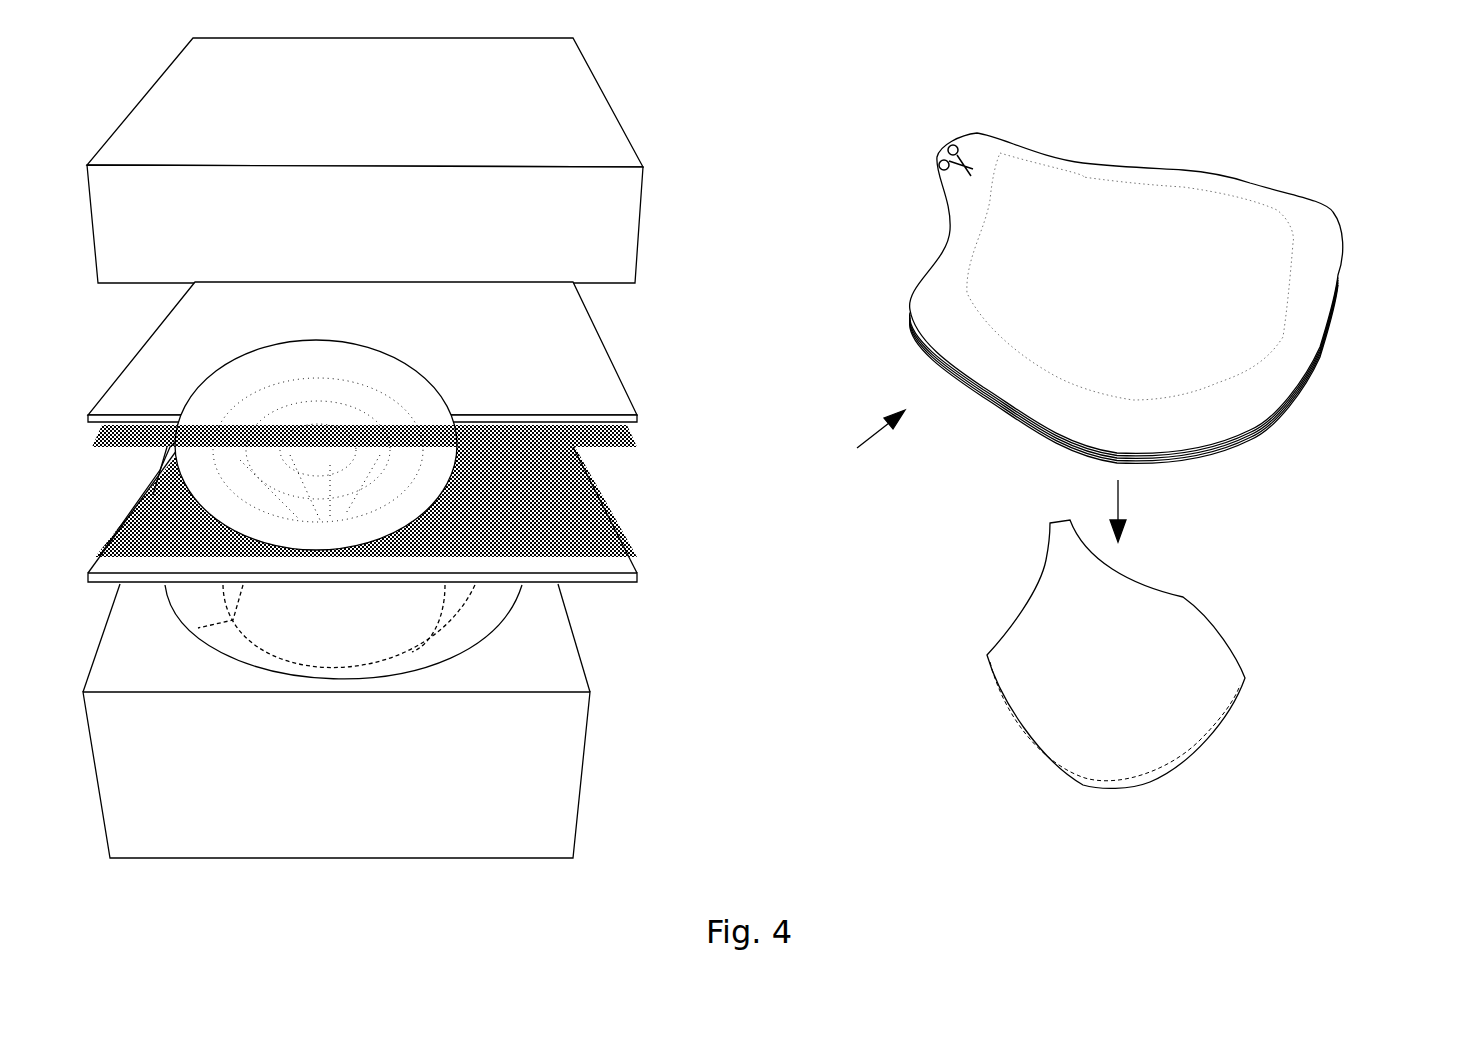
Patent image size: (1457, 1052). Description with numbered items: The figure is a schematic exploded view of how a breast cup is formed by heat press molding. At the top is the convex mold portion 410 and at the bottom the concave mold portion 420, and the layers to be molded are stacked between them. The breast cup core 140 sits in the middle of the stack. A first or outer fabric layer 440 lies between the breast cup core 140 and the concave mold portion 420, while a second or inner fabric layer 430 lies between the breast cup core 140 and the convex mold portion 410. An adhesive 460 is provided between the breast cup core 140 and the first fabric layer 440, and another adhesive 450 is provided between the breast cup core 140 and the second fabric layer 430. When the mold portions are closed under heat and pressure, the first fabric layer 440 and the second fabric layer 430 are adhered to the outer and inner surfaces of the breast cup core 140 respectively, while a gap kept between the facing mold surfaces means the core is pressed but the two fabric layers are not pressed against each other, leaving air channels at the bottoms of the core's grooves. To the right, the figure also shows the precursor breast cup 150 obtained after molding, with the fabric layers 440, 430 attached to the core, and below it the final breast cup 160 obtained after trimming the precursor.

The convex mold portion 410 is at (567, 217).
The second fabric layer 430 is at (567, 361).
The adhesive 450 is at (590, 432).
The breast cup core 140 is at (427, 496).
The adhesive 460 is at (588, 537).
The first fabric layer 440 is at (573, 578).
The concave mold portion 420 is at (522, 773).
The precursor breast cup 150 is at (1283, 340).
The final breast cup 160 is at (1182, 635).